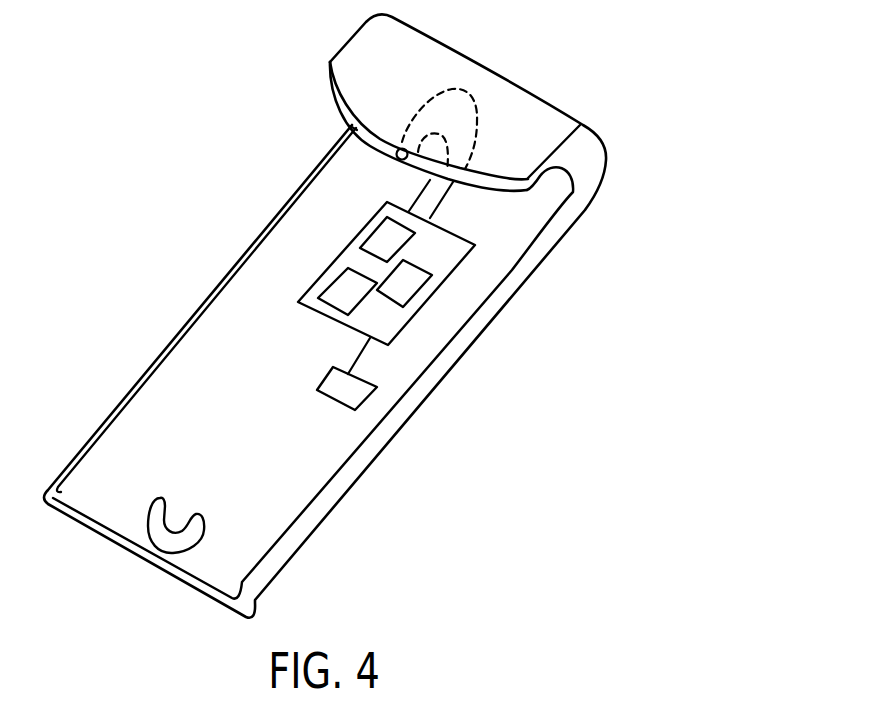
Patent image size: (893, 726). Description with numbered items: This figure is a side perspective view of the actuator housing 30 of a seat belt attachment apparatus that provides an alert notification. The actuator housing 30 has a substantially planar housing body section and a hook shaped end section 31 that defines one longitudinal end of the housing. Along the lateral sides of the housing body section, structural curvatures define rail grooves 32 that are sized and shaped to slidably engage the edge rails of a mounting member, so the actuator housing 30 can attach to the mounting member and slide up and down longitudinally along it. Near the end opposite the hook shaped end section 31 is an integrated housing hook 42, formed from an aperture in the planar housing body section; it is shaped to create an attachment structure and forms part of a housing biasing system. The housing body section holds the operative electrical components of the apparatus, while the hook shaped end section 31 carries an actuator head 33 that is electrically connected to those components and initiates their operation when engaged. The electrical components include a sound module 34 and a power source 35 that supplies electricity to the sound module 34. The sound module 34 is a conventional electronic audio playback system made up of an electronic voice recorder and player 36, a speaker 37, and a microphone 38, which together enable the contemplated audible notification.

The actuator housing 30 is at (478, 413).
The hook shaped end section 31 is at (466, 87).
The rail grooves 32 is at (87, 457).
The actuator head 33 is at (349, 128).
The sound module 34 is at (342, 255).
The power source 35 is at (337, 392).
The electronic voice recorder and player 36 is at (335, 302).
The speaker 37 is at (385, 239).
The microphone 38 is at (411, 289).
The integrated housing hook 42 is at (162, 533).